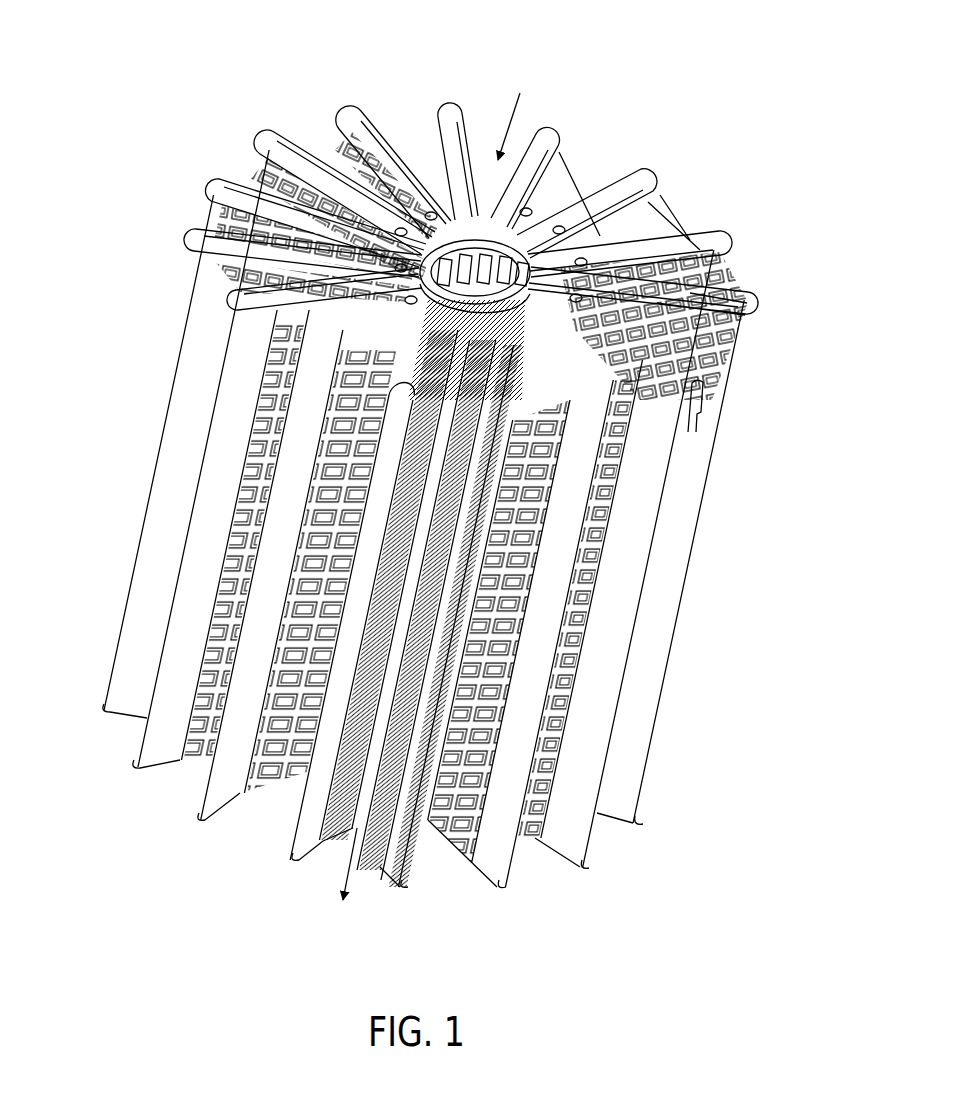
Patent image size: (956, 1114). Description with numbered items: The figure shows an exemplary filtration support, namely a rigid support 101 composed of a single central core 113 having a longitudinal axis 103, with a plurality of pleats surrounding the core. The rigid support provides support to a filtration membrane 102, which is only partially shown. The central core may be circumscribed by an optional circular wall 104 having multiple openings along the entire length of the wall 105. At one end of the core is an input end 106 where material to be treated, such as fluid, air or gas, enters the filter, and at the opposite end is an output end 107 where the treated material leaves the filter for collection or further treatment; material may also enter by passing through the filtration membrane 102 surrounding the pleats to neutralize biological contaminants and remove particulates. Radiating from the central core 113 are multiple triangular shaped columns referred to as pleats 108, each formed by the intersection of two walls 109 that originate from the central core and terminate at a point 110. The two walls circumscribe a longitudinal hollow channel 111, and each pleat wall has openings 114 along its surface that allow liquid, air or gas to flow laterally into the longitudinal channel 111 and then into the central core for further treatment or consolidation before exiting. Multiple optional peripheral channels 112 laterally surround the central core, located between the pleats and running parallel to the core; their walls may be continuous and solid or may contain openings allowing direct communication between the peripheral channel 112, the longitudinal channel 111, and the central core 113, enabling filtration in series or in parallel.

The rigid support 101 is at (240, 31).
The filtration membrane 102 is at (653, 185).
The longitudinal axis 103 is at (532, 278).
The circular wall 104 is at (493, 284).
The openings along the entire length of the wall 105 is at (469, 250).
The input end 106 is at (513, 107).
The output end 107 is at (335, 877).
The pleats 108 is at (703, 410).
The walls 109 is at (638, 396).
The point 110 is at (723, 357).
The longitudinal hollow channel 111 is at (385, 313).
The peripheral channels 112 is at (350, 217).
The central core 113 is at (407, 447).
The openings 114 is at (525, 588).